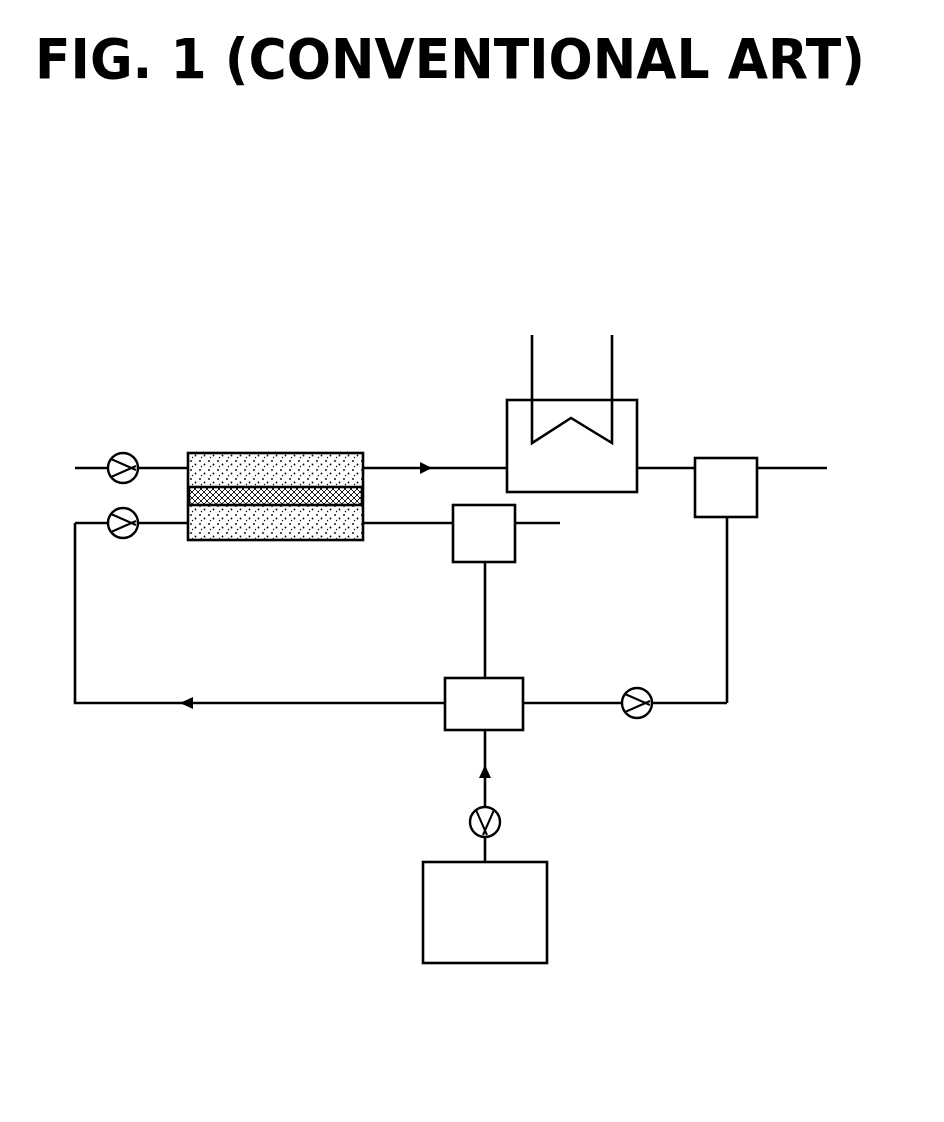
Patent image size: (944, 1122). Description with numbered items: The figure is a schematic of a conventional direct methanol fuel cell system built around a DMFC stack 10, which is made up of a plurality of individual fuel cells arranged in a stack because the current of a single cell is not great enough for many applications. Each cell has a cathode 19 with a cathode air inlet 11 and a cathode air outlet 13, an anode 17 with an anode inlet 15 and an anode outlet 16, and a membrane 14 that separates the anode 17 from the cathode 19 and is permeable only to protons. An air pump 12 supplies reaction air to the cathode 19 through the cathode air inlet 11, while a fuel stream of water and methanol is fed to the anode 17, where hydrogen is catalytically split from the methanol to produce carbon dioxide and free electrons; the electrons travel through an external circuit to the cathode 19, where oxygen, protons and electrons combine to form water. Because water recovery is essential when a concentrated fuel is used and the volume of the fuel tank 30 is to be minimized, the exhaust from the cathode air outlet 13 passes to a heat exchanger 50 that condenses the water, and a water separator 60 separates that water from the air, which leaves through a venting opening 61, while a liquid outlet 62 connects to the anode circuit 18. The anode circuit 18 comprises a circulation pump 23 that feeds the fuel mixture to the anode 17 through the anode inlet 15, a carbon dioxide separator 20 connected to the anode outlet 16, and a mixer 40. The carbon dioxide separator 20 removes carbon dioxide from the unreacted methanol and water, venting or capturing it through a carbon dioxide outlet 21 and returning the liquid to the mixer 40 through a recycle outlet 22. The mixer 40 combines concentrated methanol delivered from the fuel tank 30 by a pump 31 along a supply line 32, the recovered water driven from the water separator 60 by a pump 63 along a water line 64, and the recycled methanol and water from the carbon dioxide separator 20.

The DMFC stack 10 is at (302, 465).
The cathode air inlet 11 is at (188, 462).
The air pump 12 is at (113, 453).
The cathode air outlet 13 is at (368, 463).
The membrane 14 is at (244, 486).
The anode inlet 15 is at (187, 527).
The anode outlet 16 is at (367, 532).
The anode 17 is at (280, 542).
The anode circuit 18 is at (258, 705).
The cathode 19 is at (347, 452).
The carbon dioxide separator 20 is at (462, 563).
The carbon dioxide outlet 21 is at (515, 525).
The recycle outlet 22 is at (488, 565).
The circulation pump 23 is at (115, 537).
The fuel tank 30 is at (547, 912).
The pump 31 is at (500, 822).
The fuel supply line 32 is at (480, 733).
The mixer 40 is at (440, 717).
The heat exchanger 50 is at (637, 427).
The water separator 60 is at (757, 493).
The venting opening 61 is at (760, 467).
The liquid outlet 62 is at (730, 520).
The pump 63 is at (637, 688).
The water supply line 64 is at (525, 706).